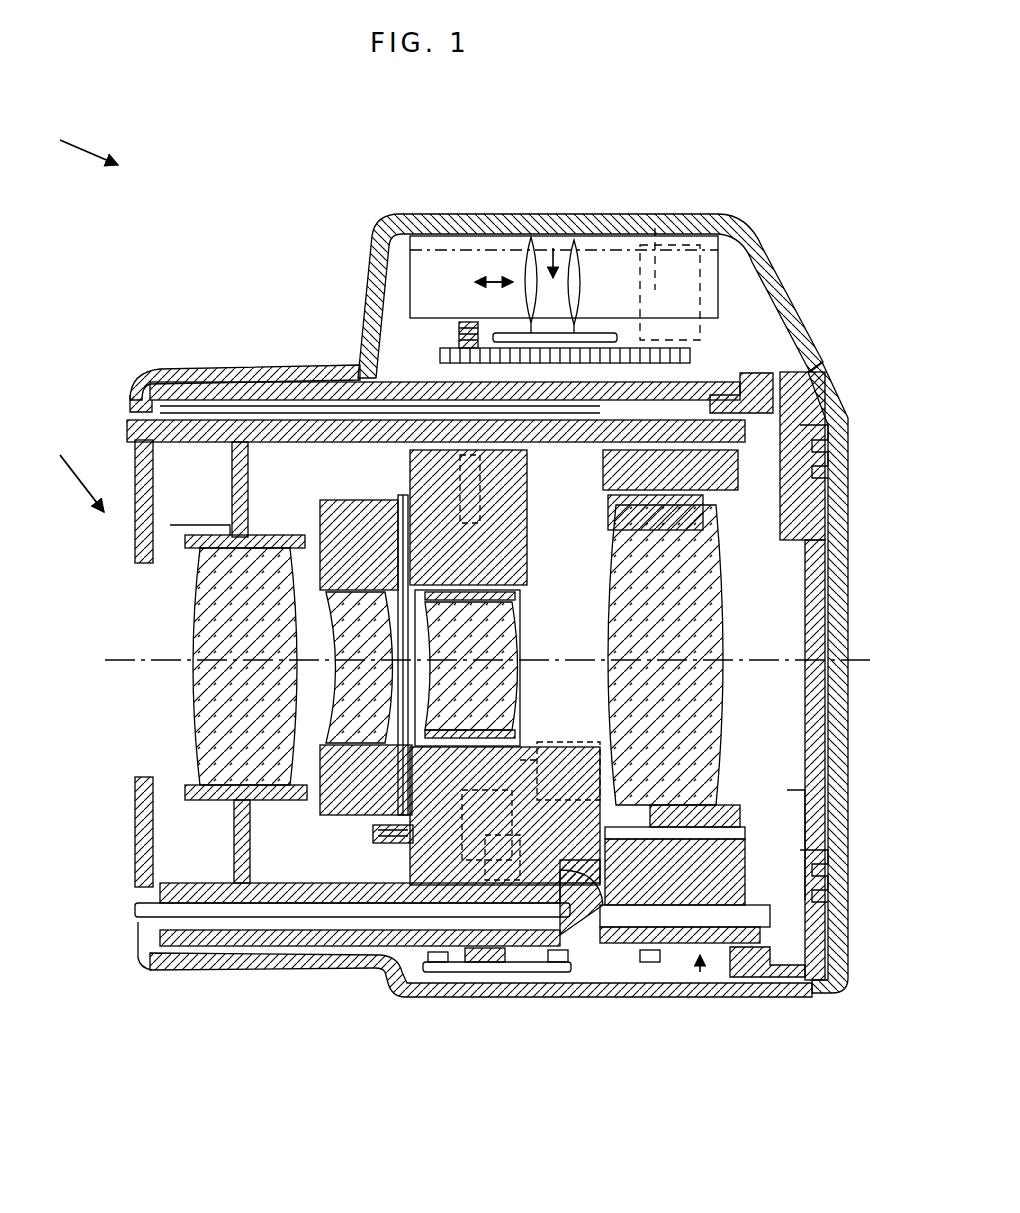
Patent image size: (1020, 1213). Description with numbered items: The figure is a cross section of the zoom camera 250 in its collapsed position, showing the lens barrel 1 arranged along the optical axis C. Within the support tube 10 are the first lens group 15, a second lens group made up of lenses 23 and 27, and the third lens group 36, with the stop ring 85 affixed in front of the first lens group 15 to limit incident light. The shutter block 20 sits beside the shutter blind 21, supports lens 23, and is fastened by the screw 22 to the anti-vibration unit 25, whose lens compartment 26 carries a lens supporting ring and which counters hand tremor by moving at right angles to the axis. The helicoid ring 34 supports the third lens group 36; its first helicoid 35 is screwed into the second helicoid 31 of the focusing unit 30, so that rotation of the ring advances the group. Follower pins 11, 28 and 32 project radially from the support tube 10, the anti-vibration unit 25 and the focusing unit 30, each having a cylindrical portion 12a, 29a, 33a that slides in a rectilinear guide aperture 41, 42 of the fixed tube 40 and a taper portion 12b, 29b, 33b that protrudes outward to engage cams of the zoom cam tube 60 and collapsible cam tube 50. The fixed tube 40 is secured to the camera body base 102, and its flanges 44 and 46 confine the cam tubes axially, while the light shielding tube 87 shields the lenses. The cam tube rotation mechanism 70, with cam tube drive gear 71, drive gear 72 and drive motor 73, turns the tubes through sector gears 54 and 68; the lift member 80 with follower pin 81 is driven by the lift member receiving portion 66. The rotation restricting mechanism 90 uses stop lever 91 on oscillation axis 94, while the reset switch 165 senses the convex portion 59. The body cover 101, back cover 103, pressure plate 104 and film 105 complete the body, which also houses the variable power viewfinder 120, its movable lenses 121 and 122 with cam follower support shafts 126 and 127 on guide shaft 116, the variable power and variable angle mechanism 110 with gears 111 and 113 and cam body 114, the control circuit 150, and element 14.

The lens barrel 1 is at (71, 469).
The zoom camera 250 is at (89, 126).
The optical axis C is at (125, 652).
The support tube 10 is at (208, 420).
The follower pin 11 is at (735, 392).
The cylindrical portion 12a is at (790, 380).
The taper portion 12b is at (775, 400).
The bottom cover portion 14 is at (388, 968).
The first lens group 15 is at (192, 636).
The shutter block 20 is at (346, 505).
The shutter blind 21 is at (398, 500).
The screw 22 is at (370, 838).
The lens 23 is at (322, 560).
The anti-vibration unit 25 is at (520, 480).
The lens compartment 26 is at (512, 600).
The lens 27 is at (512, 628).
The follower pin 28 is at (585, 985).
The cylindrical portion 29a is at (571, 990).
The taper portion 29b is at (570, 870).
The focusing unit 30 is at (818, 480).
The second helicoid 31 is at (732, 470).
The follower pin 32 is at (680, 372).
The cylindrical portion 33a is at (710, 392).
The taper portion 33b is at (662, 372).
The helicoid ring 34 is at (735, 500).
The first helicoid 35 is at (622, 520).
The third lens group 36 is at (722, 692).
The fixed tube 40 is at (148, 960).
The rectilinear guide aperture 41 is at (233, 412).
The rectilinear guide aperture 42 is at (256, 920).
The flange 44 is at (778, 980).
The flange 46 is at (150, 380).
The collapsible cam tube 50 is at (742, 978).
The sector gear 54 is at (508, 975).
The convex portion 59 is at (672, 982).
The zoom cam tube 60 is at (394, 372).
The lift member receiving portion 66 is at (612, 978).
The sector gear 68 is at (480, 960).
The cam tube rotation mechanism 70 is at (540, 812).
The cam tube drive gear 71 is at (545, 836).
The drive gear 72 is at (540, 715).
The drive motor 73 is at (555, 742).
The lift member 80 is at (700, 975).
The follower pin 81 is at (640, 985).
The stop ring 85 is at (160, 848).
The light shielding tube 87 is at (352, 955).
The rotation restricting mechanism 90 is at (450, 986).
The stop lever 91 is at (526, 965).
The oscillation axis 94 is at (410, 976).
The body cover 101 is at (199, 960).
The camera body base 102 is at (792, 808).
The back cover 103 is at (832, 432).
The pressure plate 104 is at (806, 745).
The film 105 is at (806, 622).
The variable power and variable angle mechanism 110 is at (432, 332).
The gear 111 is at (462, 350).
The gear 113 is at (368, 265).
The variable power and variable angle cam body 114 is at (455, 348).
The guide shaft 116 is at (625, 380).
The variable power viewfinder 120 is at (580, 345).
The viewfinder movable lens 121 is at (562, 340).
The viewfinder movable lens 122 is at (604, 335).
The cam follower support shaft 126 is at (548, 345).
The cam follower support shaft 127 is at (618, 345).
The control circuit 150 is at (468, 318).
The reset switch 165 is at (660, 992).